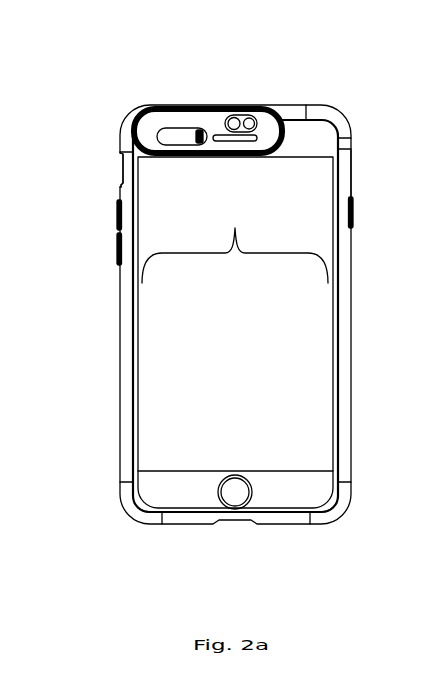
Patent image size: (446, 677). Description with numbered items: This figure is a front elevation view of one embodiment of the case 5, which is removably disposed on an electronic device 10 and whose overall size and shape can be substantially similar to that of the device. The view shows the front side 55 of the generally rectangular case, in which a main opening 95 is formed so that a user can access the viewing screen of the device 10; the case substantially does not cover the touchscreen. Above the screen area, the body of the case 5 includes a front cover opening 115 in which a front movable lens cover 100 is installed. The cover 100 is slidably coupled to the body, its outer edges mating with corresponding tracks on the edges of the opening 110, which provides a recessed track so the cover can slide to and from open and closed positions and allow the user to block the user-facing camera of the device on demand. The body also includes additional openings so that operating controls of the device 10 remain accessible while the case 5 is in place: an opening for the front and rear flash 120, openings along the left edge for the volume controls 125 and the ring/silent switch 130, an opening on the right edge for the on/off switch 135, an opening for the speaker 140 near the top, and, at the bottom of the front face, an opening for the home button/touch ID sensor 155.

The case 5 is at (117, 93).
The electronic device 10 is at (318, 187).
The front side 55 is at (120, 343).
The main opening 95 is at (235, 243).
The front movable lens cover 100 is at (182, 134).
The front cover opening 110 is at (167, 106).
The rear cover opening 115 is at (391, 173).
The front and rear flash 120 is at (237, 118).
The volume controls 125 is at (117, 215).
The ring/silent switch 130 is at (117, 173).
The on/off switch 135 is at (354, 213).
The speaker 140 is at (255, 137).
The home button/touch ID sensor 155 is at (228, 493).